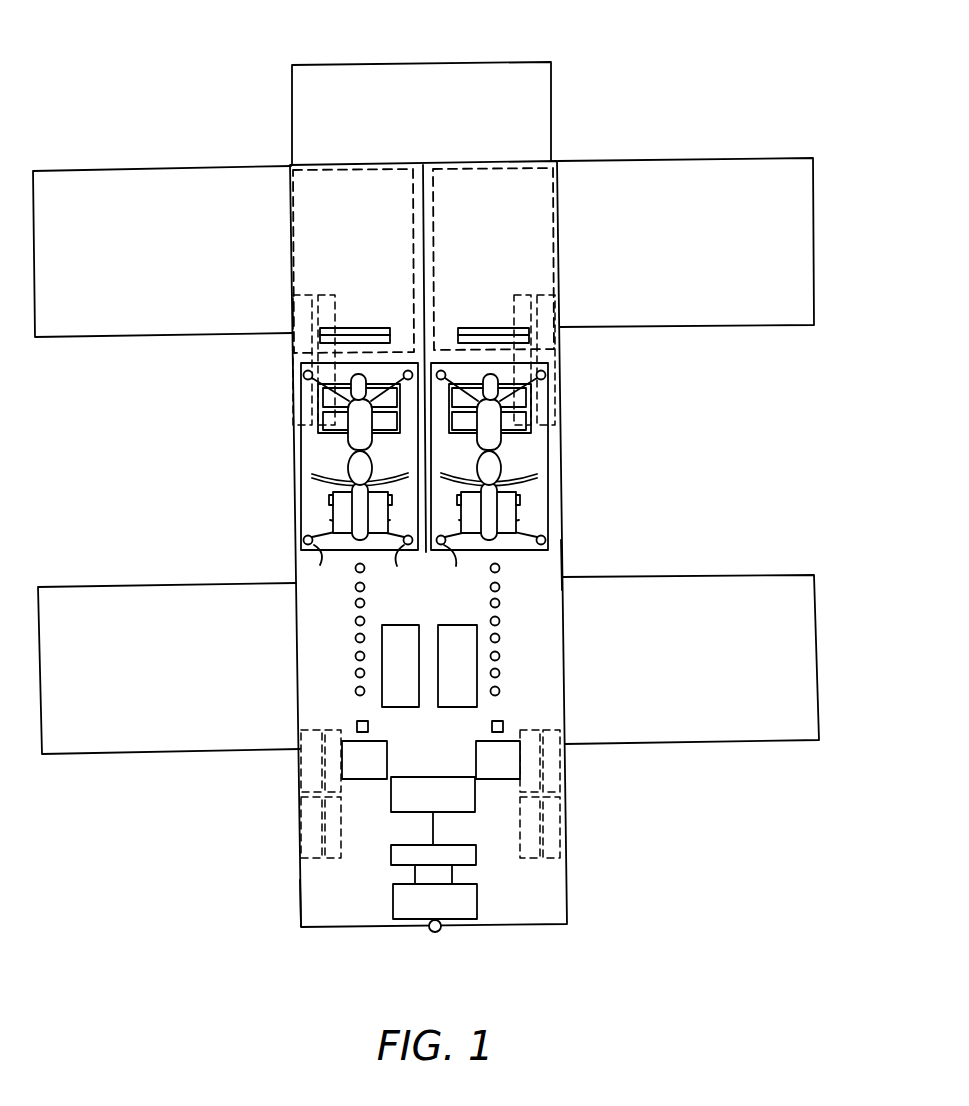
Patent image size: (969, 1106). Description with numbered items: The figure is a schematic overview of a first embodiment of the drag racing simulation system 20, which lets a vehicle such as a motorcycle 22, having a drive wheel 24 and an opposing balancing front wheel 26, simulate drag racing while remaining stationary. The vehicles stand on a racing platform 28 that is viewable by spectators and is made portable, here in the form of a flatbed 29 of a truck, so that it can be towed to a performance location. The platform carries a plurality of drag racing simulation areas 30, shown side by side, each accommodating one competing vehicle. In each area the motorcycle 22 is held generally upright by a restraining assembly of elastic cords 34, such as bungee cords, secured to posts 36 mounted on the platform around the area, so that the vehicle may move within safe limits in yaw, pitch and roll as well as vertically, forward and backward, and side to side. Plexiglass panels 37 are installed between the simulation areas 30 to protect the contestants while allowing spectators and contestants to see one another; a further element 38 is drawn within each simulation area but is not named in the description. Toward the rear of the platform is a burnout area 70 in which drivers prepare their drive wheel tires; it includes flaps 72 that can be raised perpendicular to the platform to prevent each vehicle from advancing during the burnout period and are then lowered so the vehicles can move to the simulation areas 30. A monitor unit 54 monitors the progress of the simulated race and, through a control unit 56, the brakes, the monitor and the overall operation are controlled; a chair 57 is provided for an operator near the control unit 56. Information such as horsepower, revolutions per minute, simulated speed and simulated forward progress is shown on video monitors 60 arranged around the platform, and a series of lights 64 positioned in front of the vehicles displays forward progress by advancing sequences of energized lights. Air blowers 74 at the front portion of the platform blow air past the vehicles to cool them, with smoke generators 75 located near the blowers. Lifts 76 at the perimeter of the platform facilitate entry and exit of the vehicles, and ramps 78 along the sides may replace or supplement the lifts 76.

The drag racing simulation system 20 is at (680, 128).
The motorcycle 22 is at (350, 447).
The drive wheel 24 is at (352, 377).
The front wheel 26 is at (342, 522).
The racing platform 28 is at (562, 563).
The flatbed 29 is at (312, 900).
The drag racing simulation areas 30 is at (310, 494).
The elastic cords 34 is at (387, 569).
The posts 36 is at (303, 376).
The plexiglass panels 37 is at (424, 357).
The display console 38 is at (318, 410).
The monitor unit 54 is at (391, 803).
The control unit 56 is at (447, 843).
The chair 57 is at (453, 875).
The video monitors 60 is at (407, 707).
The lights 64 is at (356, 620).
The burnout area 70 is at (317, 202).
The flaps 72 is at (370, 336).
The air blowers 74 is at (352, 762).
The smoke generators 75 is at (355, 726).
The lifts 76 is at (320, 63).
The ramps 78 is at (108, 170).